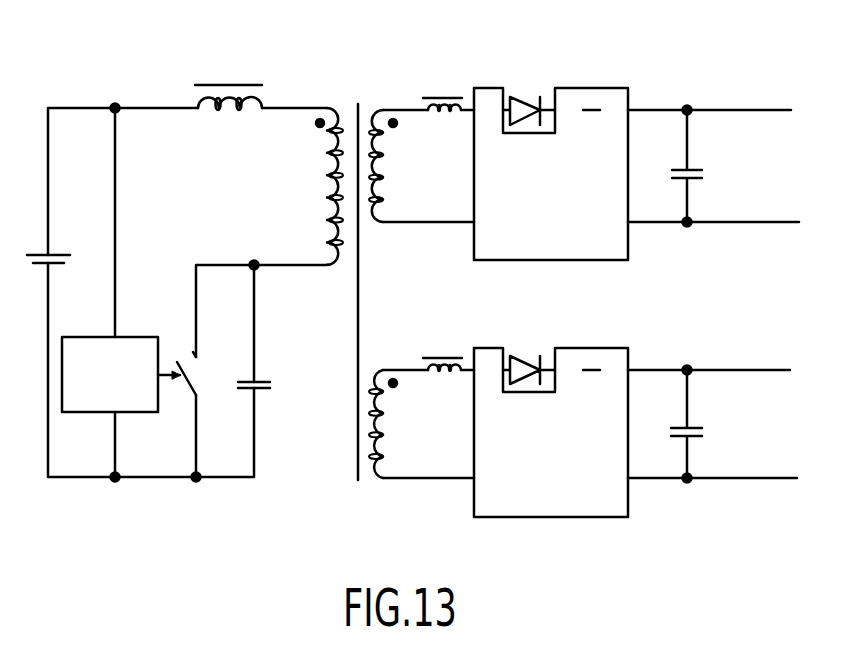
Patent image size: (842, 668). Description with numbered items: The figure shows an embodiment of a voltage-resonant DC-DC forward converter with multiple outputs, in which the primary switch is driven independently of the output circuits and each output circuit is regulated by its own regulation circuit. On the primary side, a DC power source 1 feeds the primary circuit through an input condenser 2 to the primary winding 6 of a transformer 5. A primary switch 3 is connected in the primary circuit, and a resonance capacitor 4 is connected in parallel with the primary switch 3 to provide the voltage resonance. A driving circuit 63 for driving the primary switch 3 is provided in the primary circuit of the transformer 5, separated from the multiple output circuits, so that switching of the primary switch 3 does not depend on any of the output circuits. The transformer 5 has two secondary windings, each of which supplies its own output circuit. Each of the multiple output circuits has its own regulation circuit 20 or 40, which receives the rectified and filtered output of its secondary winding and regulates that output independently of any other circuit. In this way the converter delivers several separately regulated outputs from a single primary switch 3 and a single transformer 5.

The DC power source 1 is at (57, 250).
The input condenser 2 is at (215, 84).
The primary switch 3 is at (206, 358).
The resonance capacitor 4 is at (270, 383).
The transformer 5 is at (359, 104).
The primary winding 6 is at (327, 190).
The driving circuit 63 is at (126, 337).
The regulation circuit 20 is at (573, 264).
The regulation circuit 40 is at (595, 88).